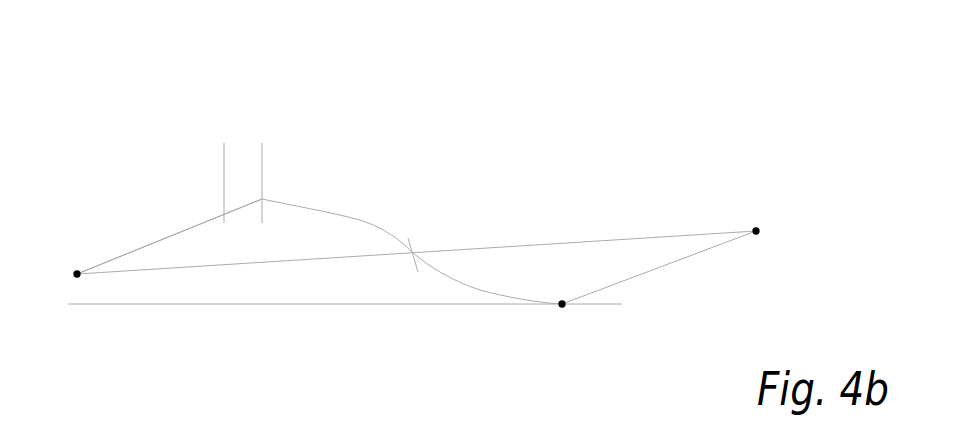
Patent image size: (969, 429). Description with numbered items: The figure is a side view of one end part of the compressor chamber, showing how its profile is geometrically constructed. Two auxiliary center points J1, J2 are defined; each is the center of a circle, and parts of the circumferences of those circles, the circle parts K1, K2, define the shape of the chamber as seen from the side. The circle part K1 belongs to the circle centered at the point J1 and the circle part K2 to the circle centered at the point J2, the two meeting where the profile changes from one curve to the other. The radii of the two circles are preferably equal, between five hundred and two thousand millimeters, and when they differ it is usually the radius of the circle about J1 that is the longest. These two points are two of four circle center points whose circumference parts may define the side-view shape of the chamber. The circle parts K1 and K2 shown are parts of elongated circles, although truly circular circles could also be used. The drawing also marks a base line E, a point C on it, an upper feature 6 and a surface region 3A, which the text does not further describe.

The optical element / lens 6 is at (247, 163).
The surface 3A is at (138, 213).
The auxiliary center point J1 is at (224, 197).
The auxiliary center point J2 is at (756, 231).
The circle part K1 is at (355, 217).
The circle part K2 is at (472, 283).
The plane / line E is at (387, 304).
The point C is at (562, 304).